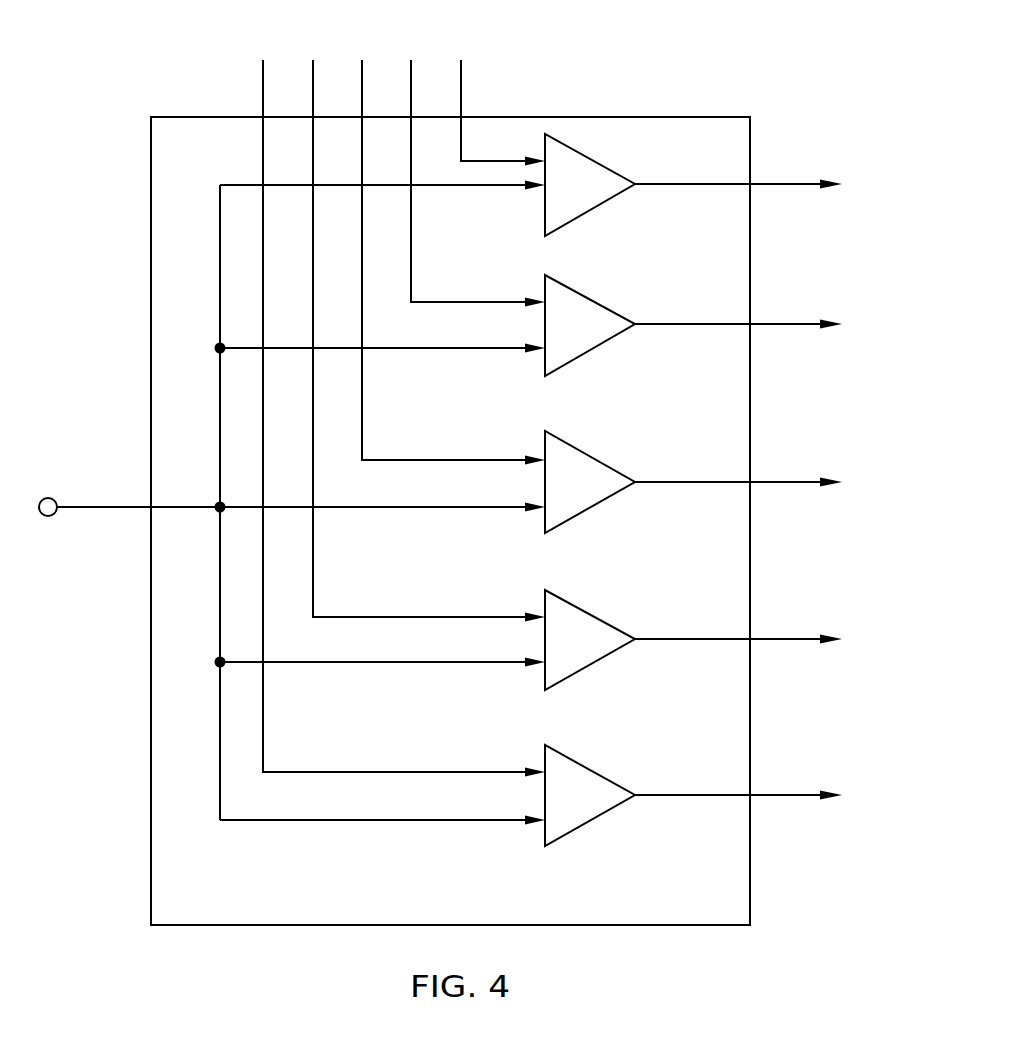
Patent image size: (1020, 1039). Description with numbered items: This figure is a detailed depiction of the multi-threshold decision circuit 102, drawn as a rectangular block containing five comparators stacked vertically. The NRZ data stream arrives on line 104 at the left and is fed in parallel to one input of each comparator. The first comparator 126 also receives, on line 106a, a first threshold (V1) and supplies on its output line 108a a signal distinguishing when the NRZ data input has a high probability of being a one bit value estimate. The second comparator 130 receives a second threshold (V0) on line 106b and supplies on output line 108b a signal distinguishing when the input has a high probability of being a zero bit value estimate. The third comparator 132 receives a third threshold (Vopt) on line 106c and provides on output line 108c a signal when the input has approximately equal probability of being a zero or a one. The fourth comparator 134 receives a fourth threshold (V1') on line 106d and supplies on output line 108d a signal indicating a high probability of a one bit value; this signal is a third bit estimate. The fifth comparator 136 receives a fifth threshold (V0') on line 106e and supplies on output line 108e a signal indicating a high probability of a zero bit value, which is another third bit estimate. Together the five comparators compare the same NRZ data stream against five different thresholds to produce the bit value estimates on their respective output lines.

The multi-threshold decision circuit 102 is at (573, 918).
The NRZ data stream input line 104 is at (110, 505).
The first threshold input line 106a is at (461, 97).
The second threshold input line 106b is at (411, 248).
The third threshold input line 106c is at (362, 403).
The fourth threshold input line 106d is at (313, 580).
The fifth threshold input line 106e is at (447, 771).
The first comparator output line 108a is at (668, 182).
The second comparator output line 108b is at (668, 322).
The third comparator output line 108c is at (668, 480).
The fourth comparator output line 108d is at (668, 637).
The fifth comparator output line 108e is at (668, 793).
The first comparator 126 is at (583, 206).
The second comparator 130 is at (583, 346).
The third comparator 132 is at (583, 504).
The fourth comparator 134 is at (583, 661).
The fifth comparator 136 is at (583, 817).